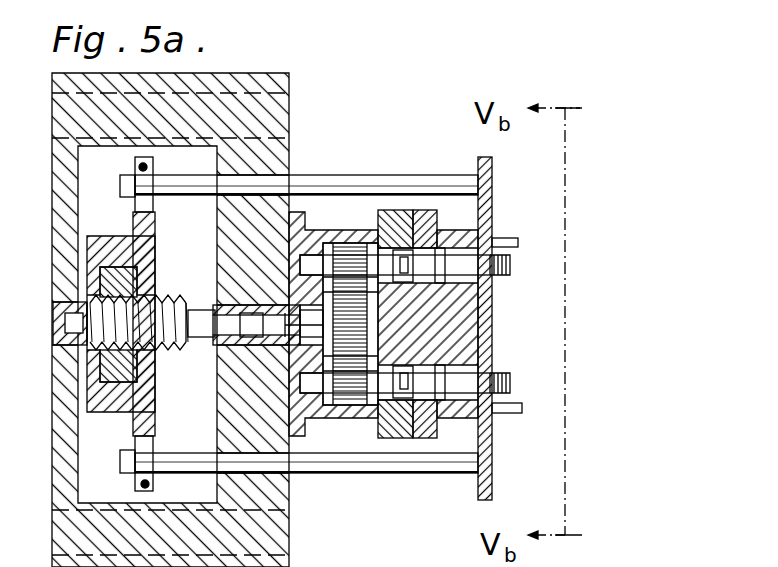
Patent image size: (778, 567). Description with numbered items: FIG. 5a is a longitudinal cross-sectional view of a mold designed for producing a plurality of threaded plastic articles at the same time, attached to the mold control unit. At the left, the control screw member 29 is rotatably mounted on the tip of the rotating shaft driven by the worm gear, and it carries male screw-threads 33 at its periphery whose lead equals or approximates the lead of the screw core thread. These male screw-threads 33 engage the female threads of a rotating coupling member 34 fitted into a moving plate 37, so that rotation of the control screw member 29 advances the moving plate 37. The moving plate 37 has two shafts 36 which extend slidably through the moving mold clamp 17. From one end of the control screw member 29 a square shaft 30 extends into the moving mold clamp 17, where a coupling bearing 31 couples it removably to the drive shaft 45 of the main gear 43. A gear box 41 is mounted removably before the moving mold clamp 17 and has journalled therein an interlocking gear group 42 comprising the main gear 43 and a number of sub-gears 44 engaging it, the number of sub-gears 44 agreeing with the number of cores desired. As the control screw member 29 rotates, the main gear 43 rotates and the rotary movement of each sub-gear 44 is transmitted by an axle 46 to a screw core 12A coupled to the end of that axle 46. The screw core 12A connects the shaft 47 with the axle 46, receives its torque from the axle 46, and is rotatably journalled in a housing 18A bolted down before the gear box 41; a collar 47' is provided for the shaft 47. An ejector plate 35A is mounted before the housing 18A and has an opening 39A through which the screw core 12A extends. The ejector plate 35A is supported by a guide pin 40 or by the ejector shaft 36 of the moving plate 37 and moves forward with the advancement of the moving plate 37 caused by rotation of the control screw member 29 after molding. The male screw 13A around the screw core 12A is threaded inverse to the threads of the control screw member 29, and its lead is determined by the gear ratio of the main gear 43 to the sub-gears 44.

The moving mold clamp 17 is at (268, 88).
The moving plate 37 is at (143, 230).
The control screw member 29 is at (163, 298).
The male screw-threads 33 is at (172, 350).
The rotating coupling member 34 is at (107, 363).
The square shaft 30 is at (210, 338).
The coupling bearing 31 is at (253, 305).
The drive shaft 45 is at (272, 330).
The gear box 41 is at (320, 242).
The sub-gears 44 is at (348, 258).
The interlocking gear group 42 is at (348, 342).
The main gear 43 is at (357, 345).
The axle 46 is at (385, 262).
The housing 18A is at (423, 240).
The ejector plate 35A is at (493, 190).
The shaft 36 is at (441, 471).
The screw core 12A is at (502, 277).
The male screw 13A is at (510, 264).
The shaft 47 is at (434, 324).
The collar 47' is at (436, 332).
The opening 39A is at (490, 370).
The guide pin 40 is at (518, 243).